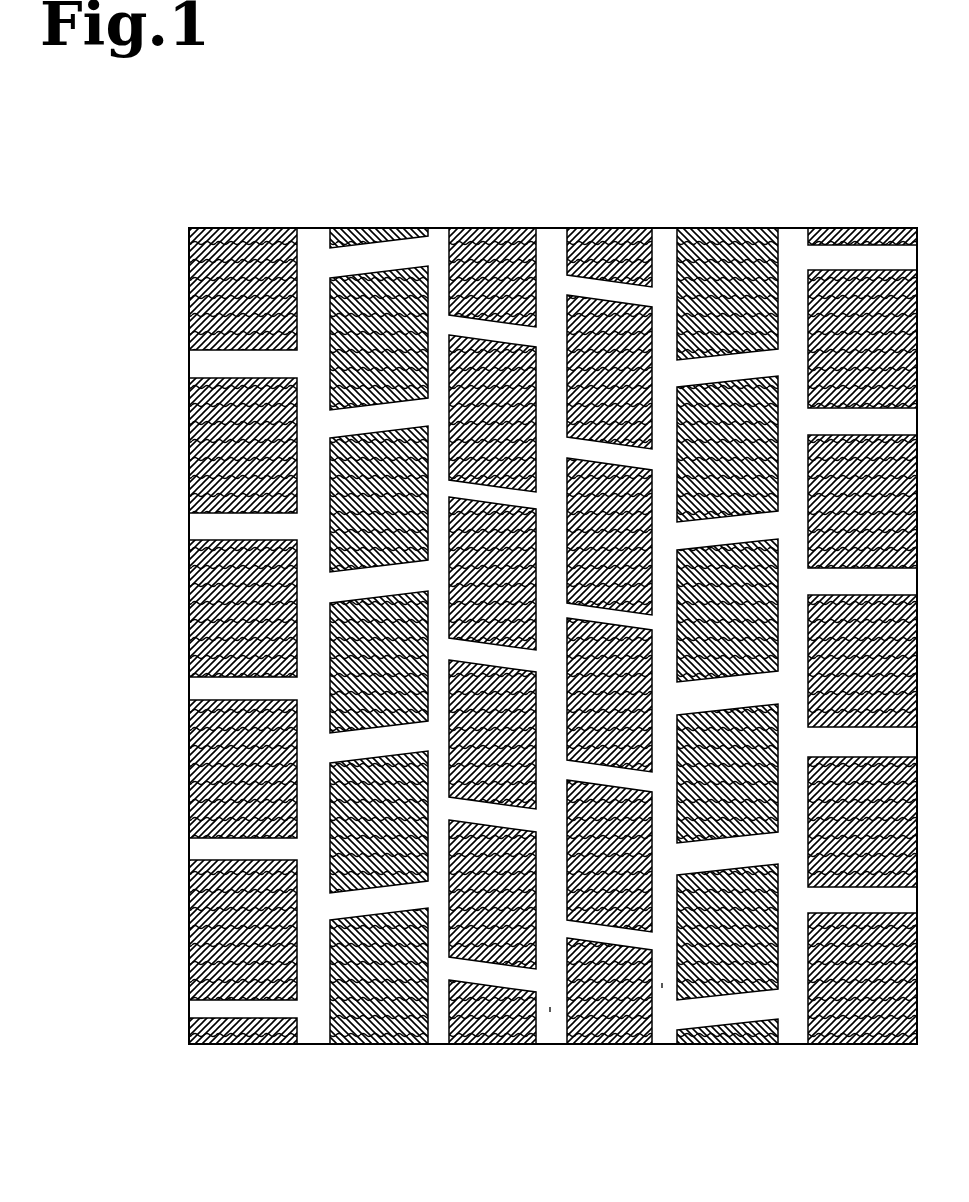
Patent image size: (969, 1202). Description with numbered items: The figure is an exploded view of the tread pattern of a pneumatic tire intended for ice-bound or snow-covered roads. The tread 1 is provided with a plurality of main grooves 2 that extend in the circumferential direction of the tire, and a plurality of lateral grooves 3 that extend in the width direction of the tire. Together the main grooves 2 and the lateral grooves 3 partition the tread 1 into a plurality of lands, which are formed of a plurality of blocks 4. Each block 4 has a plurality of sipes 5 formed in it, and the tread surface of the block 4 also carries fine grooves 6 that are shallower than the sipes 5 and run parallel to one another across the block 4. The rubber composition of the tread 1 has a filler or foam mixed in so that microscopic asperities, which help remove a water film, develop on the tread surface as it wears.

The tread 1 is at (610, 220).
The main grooves 2 is at (315, 228).
The lateral grooves 3 is at (470, 970).
The blocks 4 is at (230, 997).
The sipes 5 is at (230, 228).
The fine grooves 6 is at (372, 228).